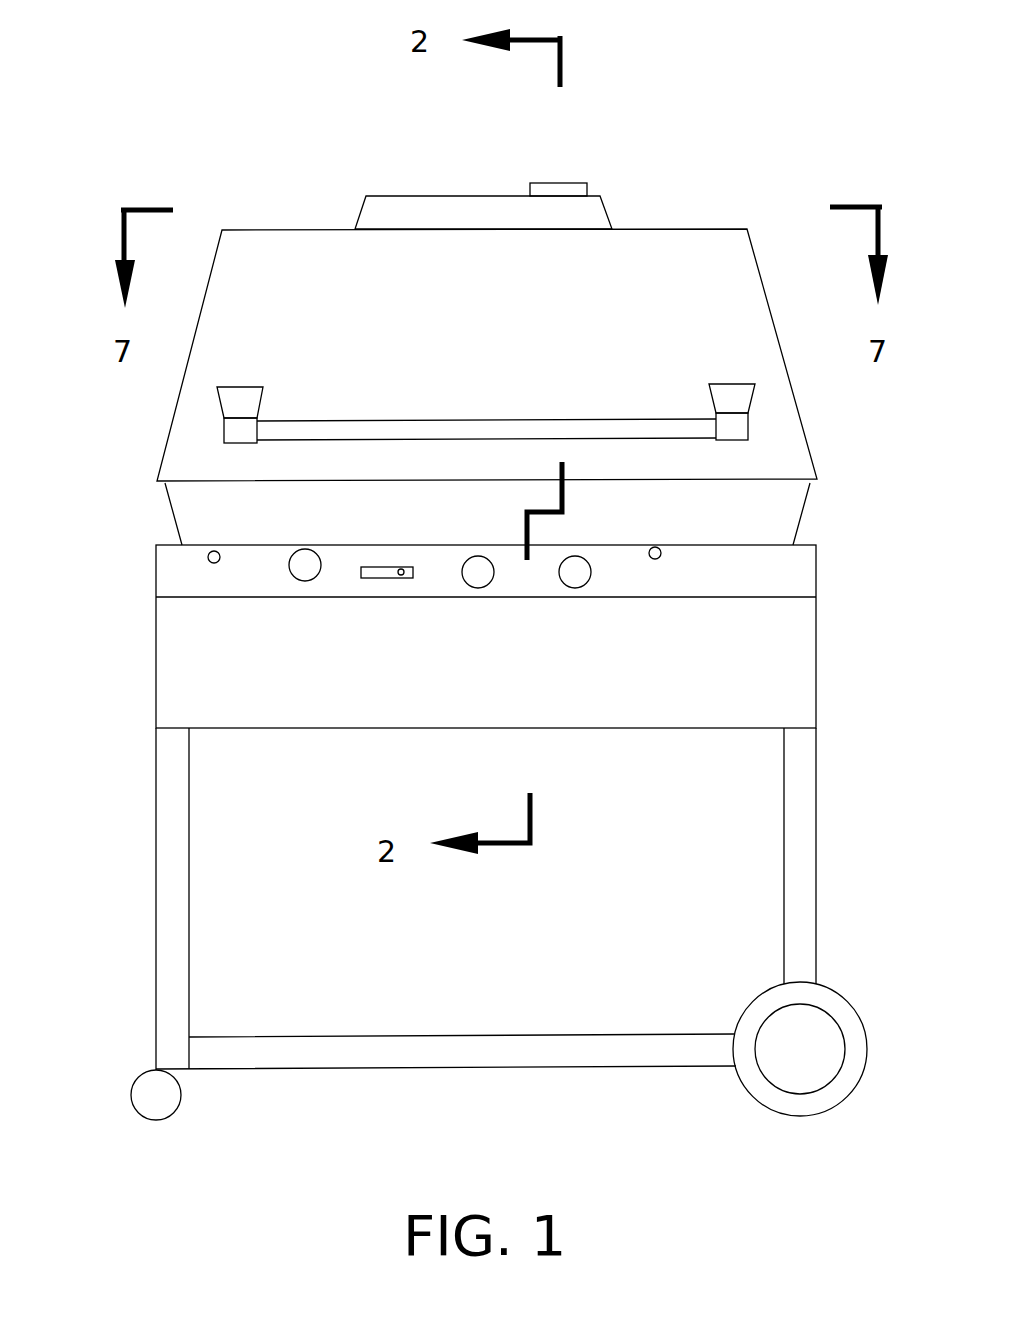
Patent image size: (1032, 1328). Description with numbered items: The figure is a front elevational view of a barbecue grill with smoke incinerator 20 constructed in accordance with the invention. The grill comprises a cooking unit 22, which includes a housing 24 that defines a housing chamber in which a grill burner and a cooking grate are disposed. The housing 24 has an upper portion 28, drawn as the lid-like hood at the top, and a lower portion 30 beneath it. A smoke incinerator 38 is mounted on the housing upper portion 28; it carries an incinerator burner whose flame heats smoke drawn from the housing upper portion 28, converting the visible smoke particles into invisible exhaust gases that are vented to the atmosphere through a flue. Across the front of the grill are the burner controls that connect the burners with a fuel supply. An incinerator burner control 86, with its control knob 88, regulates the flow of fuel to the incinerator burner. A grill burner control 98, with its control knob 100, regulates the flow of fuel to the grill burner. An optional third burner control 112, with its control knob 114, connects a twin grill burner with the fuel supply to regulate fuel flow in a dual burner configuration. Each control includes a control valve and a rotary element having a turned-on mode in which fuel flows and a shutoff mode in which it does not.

The barbecue grill with smoke incinerator 20 is at (232, 74).
The cooking unit 22 is at (810, 457).
The housing 24 is at (172, 405).
The upper portion 28 is at (802, 422).
The lower portion 30 is at (172, 513).
The smoke incinerator 38 is at (417, 196).
The incinerator burner control 86 is at (301, 583).
The control knob 88 is at (303, 583).
The grill burner control 98 is at (470, 586).
The control knob 100 is at (476, 588).
The third burner control 112 is at (587, 580).
The control knob 114 is at (578, 587).